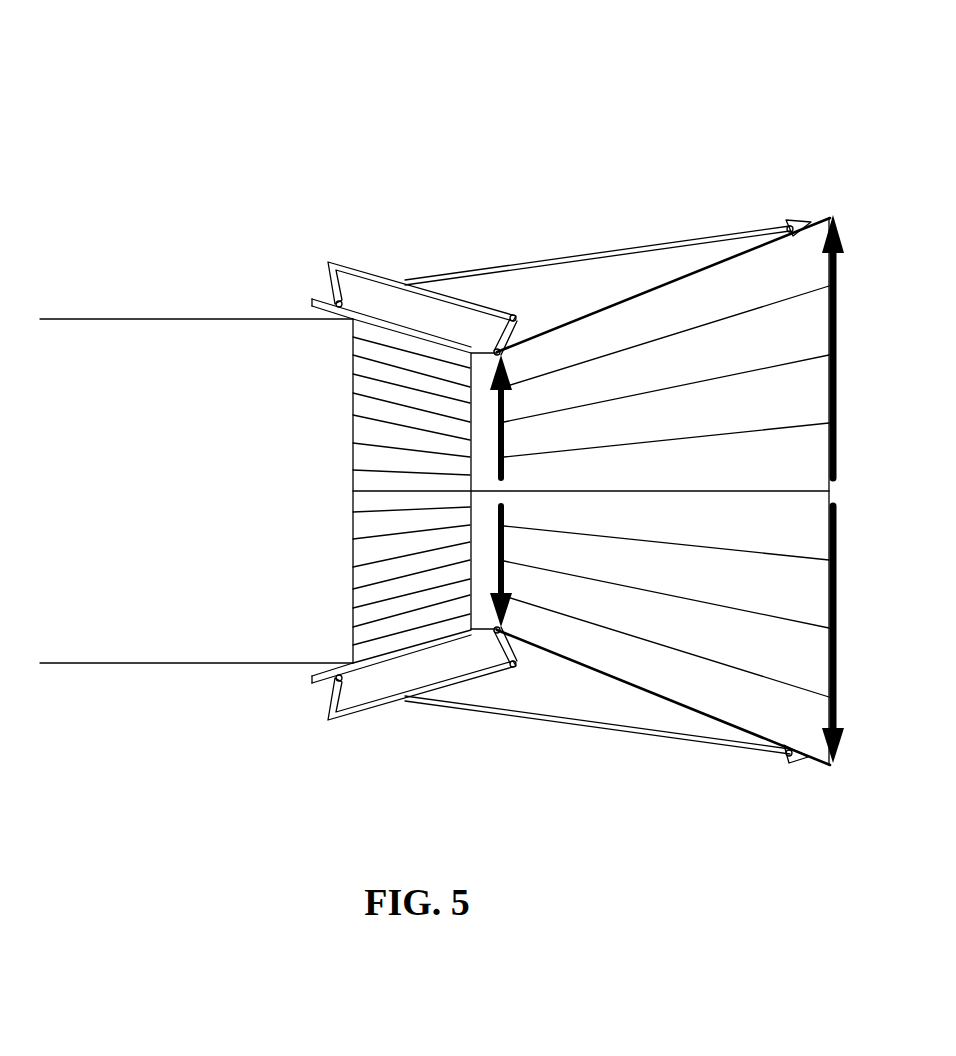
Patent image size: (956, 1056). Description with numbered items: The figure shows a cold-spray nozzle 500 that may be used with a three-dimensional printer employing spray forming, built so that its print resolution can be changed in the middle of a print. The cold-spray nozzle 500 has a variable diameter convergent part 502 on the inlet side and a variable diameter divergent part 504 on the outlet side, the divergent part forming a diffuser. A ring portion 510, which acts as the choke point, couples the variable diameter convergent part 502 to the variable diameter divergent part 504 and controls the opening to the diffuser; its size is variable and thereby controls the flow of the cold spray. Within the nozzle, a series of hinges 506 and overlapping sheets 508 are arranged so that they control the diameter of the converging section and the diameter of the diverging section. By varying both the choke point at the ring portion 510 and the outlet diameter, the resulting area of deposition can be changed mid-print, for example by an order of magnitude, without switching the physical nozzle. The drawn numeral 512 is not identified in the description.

The cold-spray nozzle 500 is at (108, 58).
The variable diameter convergent part 502 is at (395, 222).
The variable diameter divergent part 504 is at (642, 175).
The hinges 506 is at (470, 533).
The overlapping sheets 508 is at (743, 333).
The ring portion 510 is at (483, 368).
The hinged frame 512 is at (358, 710).